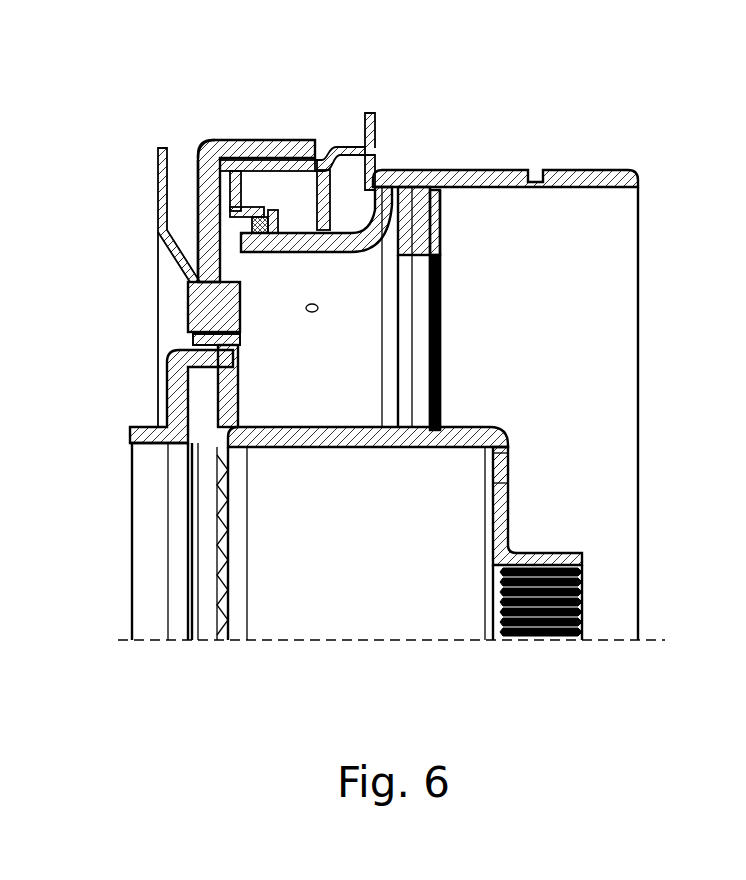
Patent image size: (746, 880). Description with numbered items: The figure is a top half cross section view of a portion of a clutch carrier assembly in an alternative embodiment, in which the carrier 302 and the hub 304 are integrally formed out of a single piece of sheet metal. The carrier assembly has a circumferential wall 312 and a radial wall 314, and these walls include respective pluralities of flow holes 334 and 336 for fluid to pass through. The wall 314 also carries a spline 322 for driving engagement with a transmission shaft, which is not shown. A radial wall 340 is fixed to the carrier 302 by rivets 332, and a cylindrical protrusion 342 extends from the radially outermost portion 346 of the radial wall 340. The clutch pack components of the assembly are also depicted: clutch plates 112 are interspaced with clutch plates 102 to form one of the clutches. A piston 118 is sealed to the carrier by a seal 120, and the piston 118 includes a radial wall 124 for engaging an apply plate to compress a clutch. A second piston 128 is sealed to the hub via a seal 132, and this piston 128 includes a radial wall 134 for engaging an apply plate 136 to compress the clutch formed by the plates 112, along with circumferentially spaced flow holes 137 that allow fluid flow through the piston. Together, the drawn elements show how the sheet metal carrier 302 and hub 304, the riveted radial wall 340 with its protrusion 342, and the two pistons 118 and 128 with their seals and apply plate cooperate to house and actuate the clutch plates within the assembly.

The clutch plates 102 is at (430, 195).
The clutch plates 112 is at (435, 217).
The piston 118 is at (273, 167).
The seal 120 is at (233, 222).
The radial wall 124 is at (368, 117).
The piston 128 is at (268, 378).
The seal 132 is at (307, 410).
The radial wall 134 is at (392, 228).
The apply plate 136 is at (408, 203).
The flow holes 137 is at (306, 308).
The carrier 302 is at (190, 268).
The hub 304 is at (360, 437).
The circumferential wall 312 is at (440, 377).
The radial wall 314 is at (503, 502).
The spline 322 is at (547, 617).
The rivets 332 is at (220, 322).
The flow holes 334 is at (290, 427).
The flow holes 336 is at (498, 465).
The radial wall 340 is at (212, 178).
The cylindrical protrusion 342 is at (243, 147).
The radially outermost portion 346 is at (215, 148).